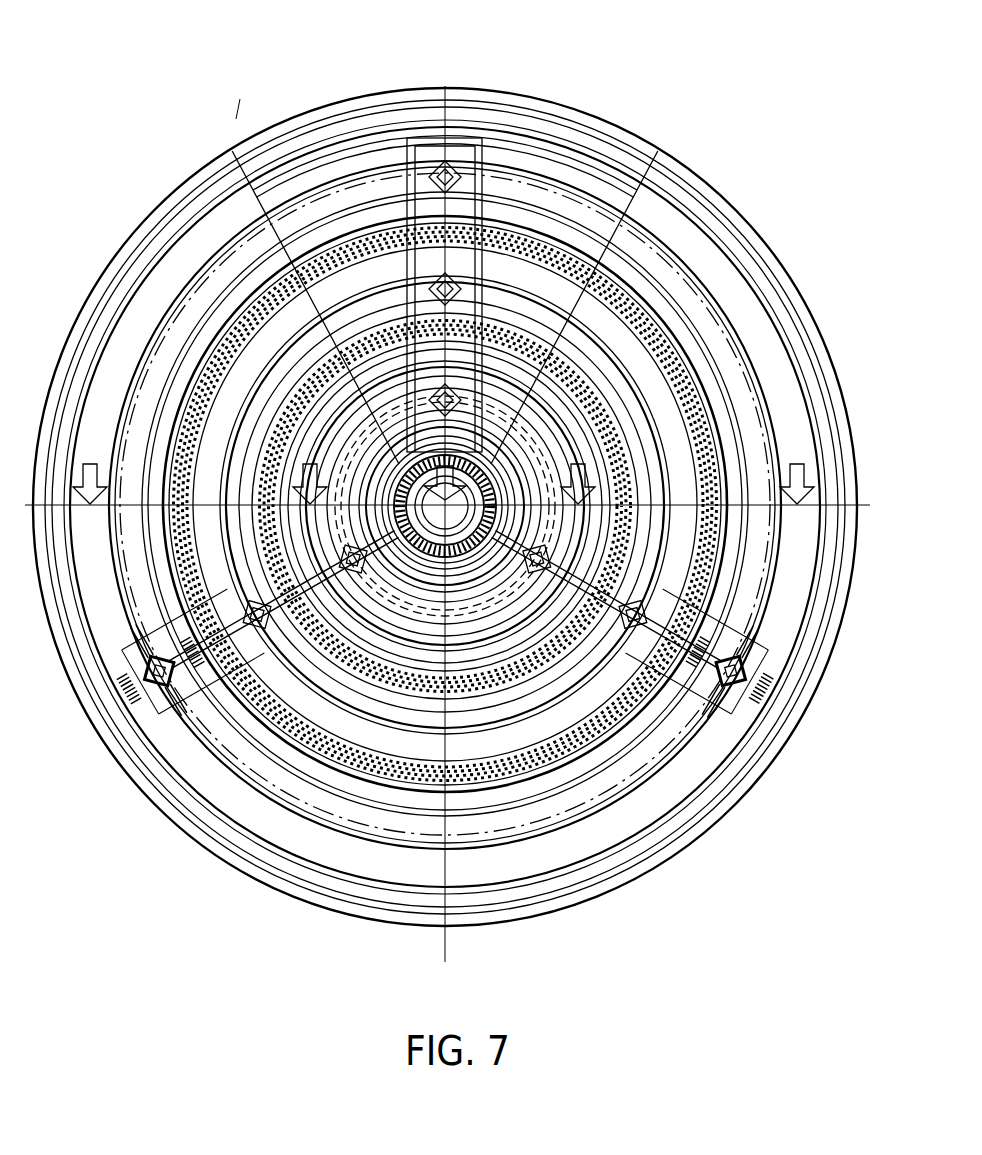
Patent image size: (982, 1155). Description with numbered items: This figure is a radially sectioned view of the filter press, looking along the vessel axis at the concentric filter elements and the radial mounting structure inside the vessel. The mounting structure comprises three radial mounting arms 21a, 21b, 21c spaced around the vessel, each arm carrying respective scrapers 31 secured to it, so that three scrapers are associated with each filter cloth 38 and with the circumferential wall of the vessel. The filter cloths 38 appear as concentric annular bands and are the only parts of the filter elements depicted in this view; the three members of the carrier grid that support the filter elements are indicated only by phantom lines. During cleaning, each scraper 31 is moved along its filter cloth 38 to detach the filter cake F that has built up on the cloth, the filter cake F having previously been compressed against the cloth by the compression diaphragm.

The radial mounting arm 21a is at (457, 157).
The radial mounting arm 21b is at (150, 712).
The radial mounting arm 21c is at (738, 718).
The scraper 31 is at (747, 677).
The filter cloth 38 is at (615, 723).
The filter cake F is at (310, 757).